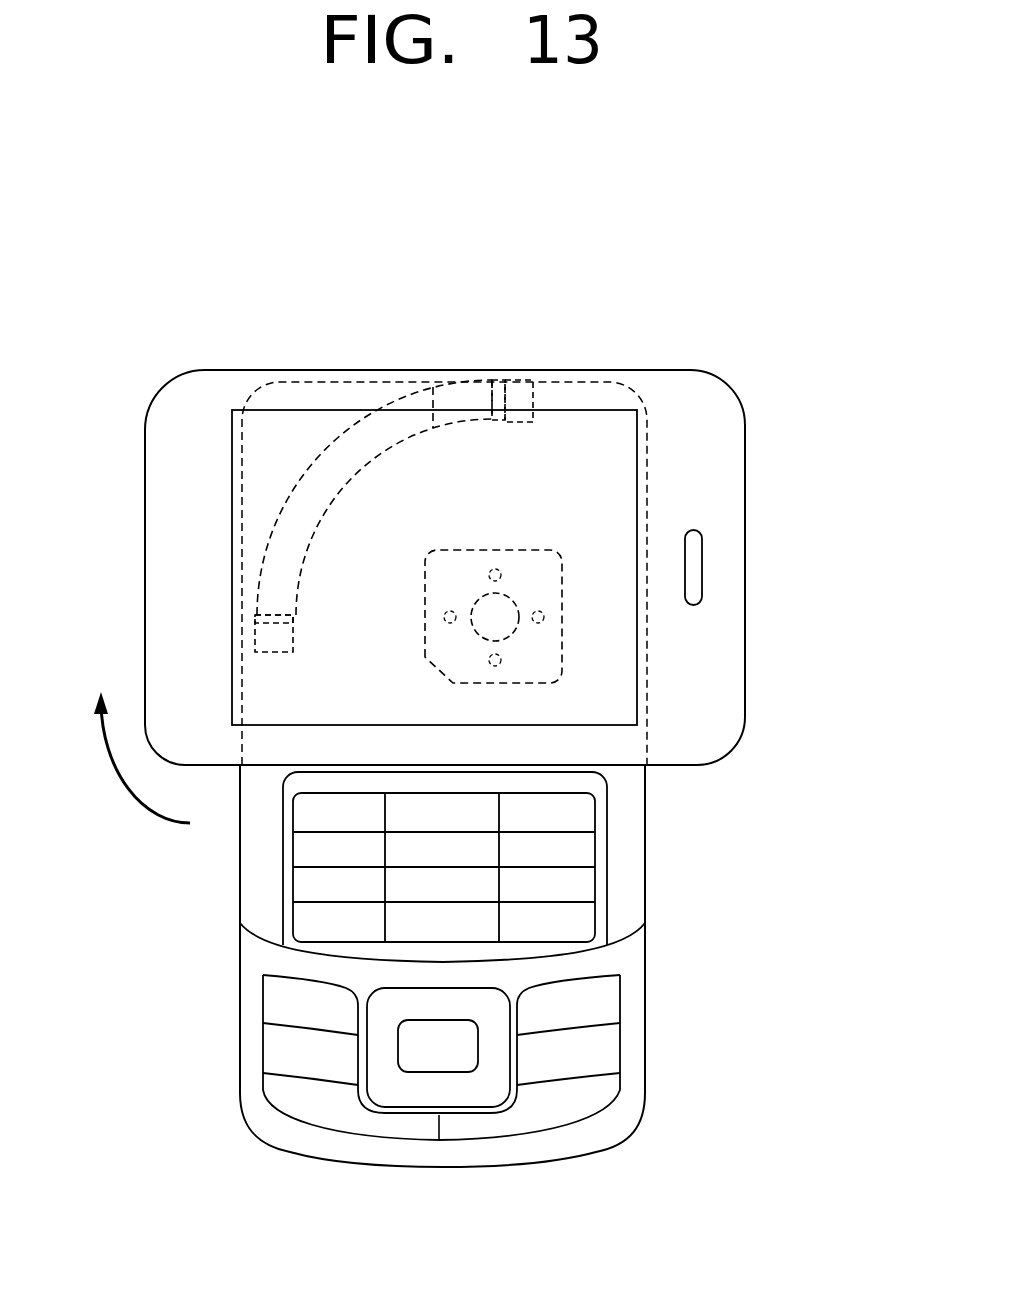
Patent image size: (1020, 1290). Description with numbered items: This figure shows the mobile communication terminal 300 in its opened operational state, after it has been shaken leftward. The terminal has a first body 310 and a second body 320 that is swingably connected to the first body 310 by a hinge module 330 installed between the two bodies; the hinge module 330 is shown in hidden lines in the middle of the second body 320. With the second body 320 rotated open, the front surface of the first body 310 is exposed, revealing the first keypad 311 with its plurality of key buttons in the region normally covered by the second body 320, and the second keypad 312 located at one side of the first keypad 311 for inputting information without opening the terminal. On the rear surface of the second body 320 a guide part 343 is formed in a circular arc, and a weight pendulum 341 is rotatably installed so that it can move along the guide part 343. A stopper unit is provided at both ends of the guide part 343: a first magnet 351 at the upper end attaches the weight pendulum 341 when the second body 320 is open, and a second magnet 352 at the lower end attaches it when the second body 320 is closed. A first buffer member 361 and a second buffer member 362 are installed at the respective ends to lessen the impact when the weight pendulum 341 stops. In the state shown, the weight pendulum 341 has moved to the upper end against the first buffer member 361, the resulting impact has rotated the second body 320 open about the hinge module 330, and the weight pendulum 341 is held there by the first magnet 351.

The mobile communication terminal 300 is at (782, 370).
The first body 310 is at (635, 1050).
The first keypad 311 is at (320, 850).
The second keypad 312 is at (283, 1047).
The second body 320 is at (720, 473).
The hinge module 330 is at (530, 607).
The weight pendulum 341 is at (457, 395).
The guide part 343 is at (293, 494).
The first magnet 351 is at (522, 393).
The second magnet 352 is at (262, 638).
The first buffer member 361 is at (499, 388).
The second buffer member 362 is at (265, 617).